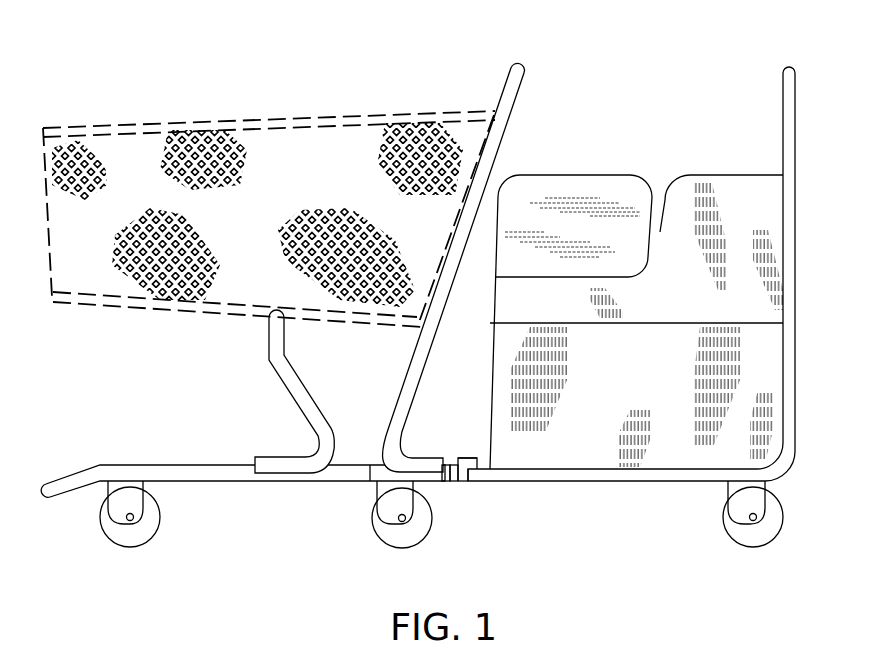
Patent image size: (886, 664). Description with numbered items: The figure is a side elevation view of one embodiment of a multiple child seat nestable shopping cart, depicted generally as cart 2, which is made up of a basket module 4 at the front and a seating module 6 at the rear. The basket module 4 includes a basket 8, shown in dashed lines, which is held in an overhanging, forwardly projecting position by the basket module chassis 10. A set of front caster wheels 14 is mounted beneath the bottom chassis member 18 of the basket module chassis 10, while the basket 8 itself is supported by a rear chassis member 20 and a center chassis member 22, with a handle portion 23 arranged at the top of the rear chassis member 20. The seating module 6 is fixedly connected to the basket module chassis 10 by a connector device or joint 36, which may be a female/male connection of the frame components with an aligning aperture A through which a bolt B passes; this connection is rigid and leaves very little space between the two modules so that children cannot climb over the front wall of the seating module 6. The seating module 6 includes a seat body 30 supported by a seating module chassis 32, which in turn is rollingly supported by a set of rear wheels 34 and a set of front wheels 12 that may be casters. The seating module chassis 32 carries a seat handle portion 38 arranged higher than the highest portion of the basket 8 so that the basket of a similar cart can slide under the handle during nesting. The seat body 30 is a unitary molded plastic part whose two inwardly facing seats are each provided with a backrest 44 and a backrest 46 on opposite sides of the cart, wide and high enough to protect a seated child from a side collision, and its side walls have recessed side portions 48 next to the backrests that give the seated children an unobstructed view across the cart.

The cart 2 is at (475, 57).
The basket module 4 is at (280, 102).
The seating module 6 is at (652, 75).
The basket 8 is at (78, 128).
The basket module chassis 10 is at (263, 408).
The front wheels 12 is at (373, 512).
The front caster wheels 14 is at (102, 512).
The bottom chassis member 18 is at (180, 464).
The rear chassis member 20 is at (408, 370).
The center chassis member 22 is at (268, 347).
The handle portion 23 is at (523, 70).
The seat body 30 is at (780, 232).
The seating module chassis 32 is at (560, 482).
The rear wheels 34 is at (783, 507).
The connector device or joint 36 is at (442, 456).
The seat handle portion 38 is at (792, 63).
The backrest 44 is at (558, 172).
The backrest 46 is at (743, 173).
The recessed side portions 48 is at (507, 275).
The aligning aperture A is at (463, 483).
The bolt B is at (470, 438).